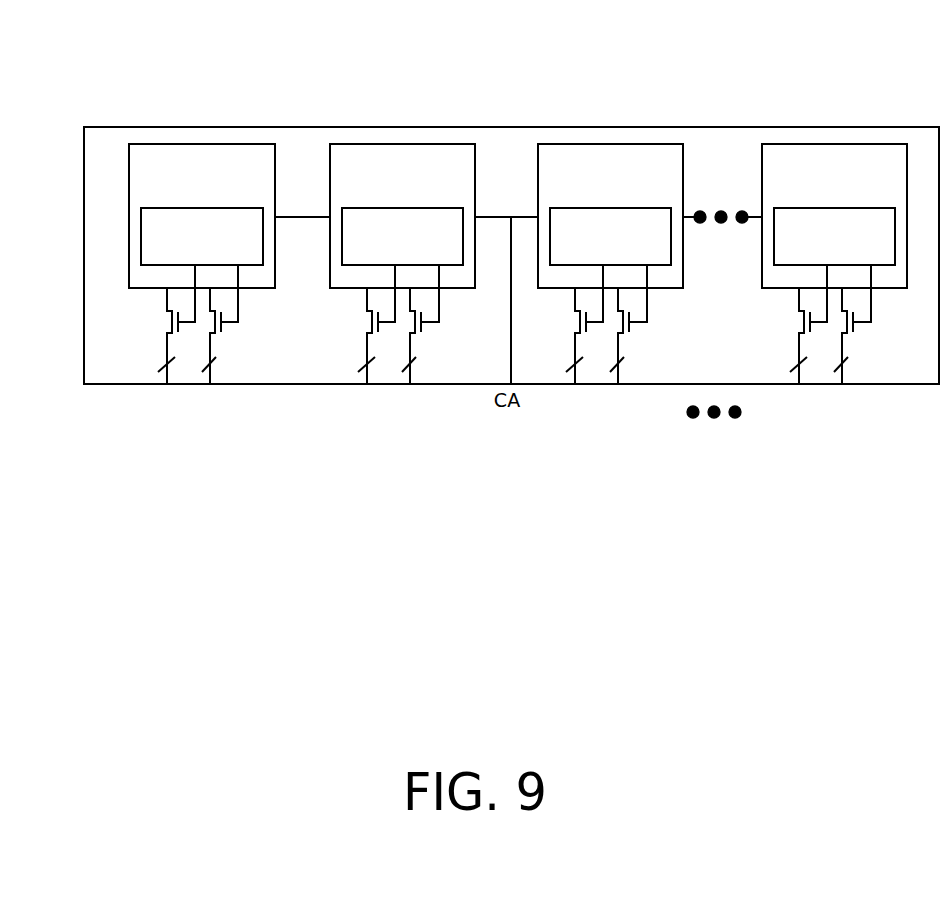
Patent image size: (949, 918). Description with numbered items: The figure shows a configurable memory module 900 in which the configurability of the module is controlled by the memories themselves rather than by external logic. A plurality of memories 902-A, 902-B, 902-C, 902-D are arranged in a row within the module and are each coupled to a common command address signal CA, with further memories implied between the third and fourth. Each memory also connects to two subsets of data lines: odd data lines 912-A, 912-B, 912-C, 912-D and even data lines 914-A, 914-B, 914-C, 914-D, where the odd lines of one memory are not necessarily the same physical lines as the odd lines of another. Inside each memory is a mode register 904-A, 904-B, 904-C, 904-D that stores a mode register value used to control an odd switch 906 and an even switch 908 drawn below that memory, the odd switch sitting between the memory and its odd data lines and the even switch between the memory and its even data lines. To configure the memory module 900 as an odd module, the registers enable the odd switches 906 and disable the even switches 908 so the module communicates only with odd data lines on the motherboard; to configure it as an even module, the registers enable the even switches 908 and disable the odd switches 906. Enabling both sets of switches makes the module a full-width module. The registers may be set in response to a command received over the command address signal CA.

The configurable memory module 900 is at (76, 88).
The memory 902-A is at (174, 203).
The memory 902-B is at (375, 203).
The memory 902-C is at (583, 203).
The memory 902-D is at (807, 203).
The mode register 904-A is at (174, 258).
The mode register 904-B is at (375, 258).
The mode register 904-C is at (583, 258).
The mode register 904-D is at (807, 258).
The odd switch 906 is at (172, 333).
The even switch 908 is at (215, 334).
The odd data lines 912-A is at (118, 463).
The odd data lines 912-B is at (329, 463).
The odd data lines 912-C is at (538, 463).
The odd data lines 912-D is at (758, 463).
The even data lines 914-A is at (191, 463).
The even data lines 914-B is at (399, 463).
The even data lines 914-C is at (606, 463).
The even data lines 914-D is at (829, 463).